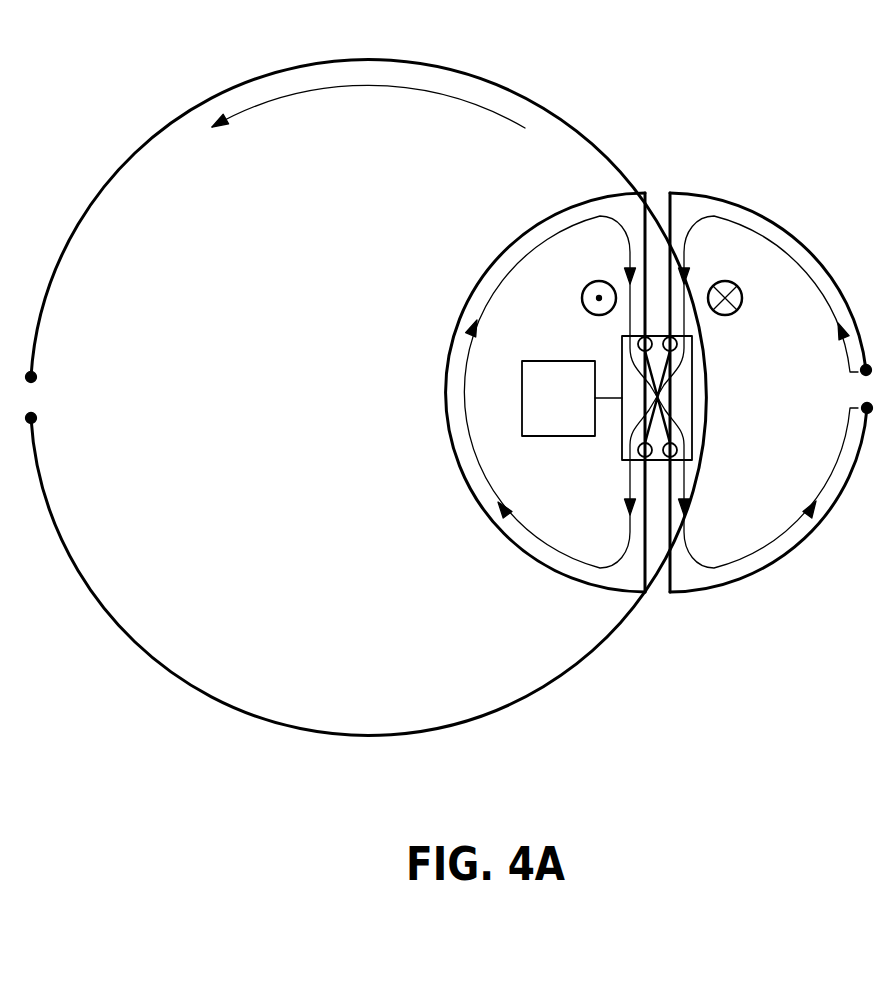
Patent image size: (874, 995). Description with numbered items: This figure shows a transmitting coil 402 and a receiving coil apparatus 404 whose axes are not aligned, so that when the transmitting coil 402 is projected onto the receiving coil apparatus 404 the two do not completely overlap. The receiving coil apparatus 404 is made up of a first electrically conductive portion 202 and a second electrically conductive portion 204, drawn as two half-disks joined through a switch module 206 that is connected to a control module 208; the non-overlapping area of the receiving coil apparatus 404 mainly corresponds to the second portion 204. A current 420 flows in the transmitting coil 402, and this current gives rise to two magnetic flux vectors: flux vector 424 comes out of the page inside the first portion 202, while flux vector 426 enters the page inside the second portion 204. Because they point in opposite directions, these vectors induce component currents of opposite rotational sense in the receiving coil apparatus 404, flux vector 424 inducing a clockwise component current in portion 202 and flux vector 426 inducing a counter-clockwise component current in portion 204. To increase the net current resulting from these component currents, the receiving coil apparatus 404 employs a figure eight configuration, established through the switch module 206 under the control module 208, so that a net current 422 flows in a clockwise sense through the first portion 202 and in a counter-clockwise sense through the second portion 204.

The transmitting coil 402 is at (492, 82).
The current 420 is at (428, 92).
The receiving coil apparatus 404 is at (771, 370).
The first electrically conductive portion 202 is at (546, 222).
The second electrically conductive portion 204 is at (773, 222).
The switch module 206 is at (693, 422).
The control module 208 is at (543, 361).
The net current 422 is at (625, 237).
The magnetic flux vector 424 is at (582, 298).
The magnetic flux vector 426 is at (725, 316).